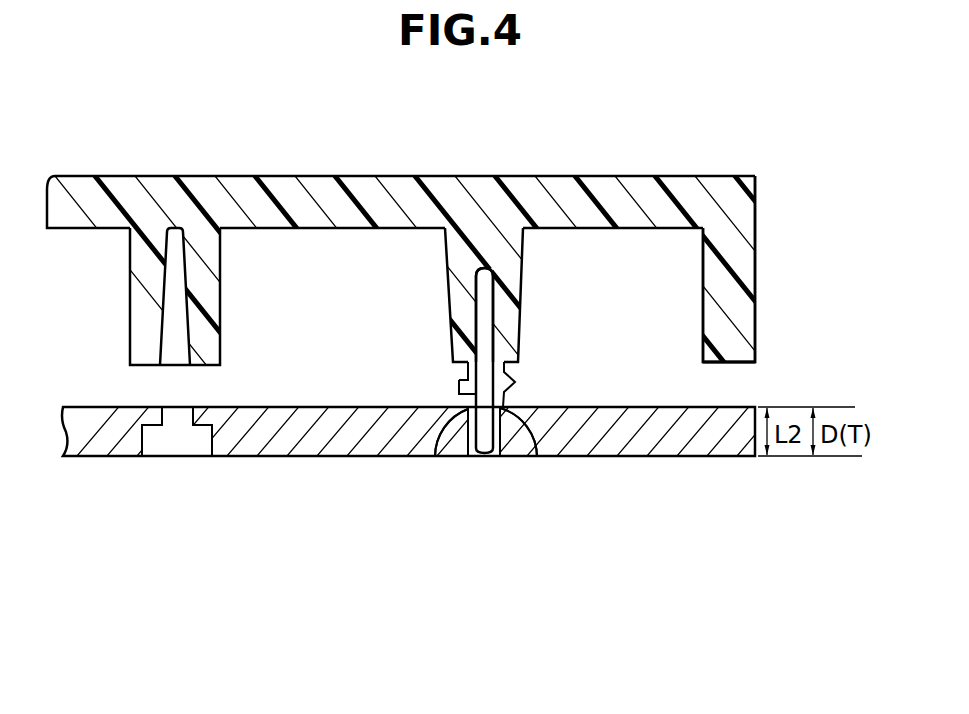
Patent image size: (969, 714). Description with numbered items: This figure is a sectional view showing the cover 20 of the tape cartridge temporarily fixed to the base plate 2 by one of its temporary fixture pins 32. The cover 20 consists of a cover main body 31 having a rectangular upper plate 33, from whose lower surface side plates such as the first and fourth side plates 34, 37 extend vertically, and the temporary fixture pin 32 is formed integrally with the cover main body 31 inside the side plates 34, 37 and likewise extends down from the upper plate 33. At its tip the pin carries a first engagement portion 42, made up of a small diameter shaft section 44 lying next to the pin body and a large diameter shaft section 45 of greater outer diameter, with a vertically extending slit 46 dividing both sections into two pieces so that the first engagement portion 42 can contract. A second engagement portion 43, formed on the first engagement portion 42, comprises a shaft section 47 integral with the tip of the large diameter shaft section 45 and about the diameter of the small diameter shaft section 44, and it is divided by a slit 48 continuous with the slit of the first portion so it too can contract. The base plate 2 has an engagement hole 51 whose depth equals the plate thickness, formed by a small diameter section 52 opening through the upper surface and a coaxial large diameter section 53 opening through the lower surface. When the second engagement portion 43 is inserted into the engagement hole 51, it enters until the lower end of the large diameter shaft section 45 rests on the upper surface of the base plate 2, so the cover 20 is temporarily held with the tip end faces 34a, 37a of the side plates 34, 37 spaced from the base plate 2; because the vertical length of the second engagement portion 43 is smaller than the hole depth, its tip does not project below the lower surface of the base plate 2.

The base plate 2 is at (431, 441).
The cover 20 is at (468, 229).
The cover main body 31 is at (508, 177).
The temporary fixture pin 32 is at (530, 276).
The upper plate 33 is at (374, 188).
The first side plate 34 is at (737, 240).
The fourth side plate 37 is at (775, 269).
The tip end face of first side plate 34a is at (735, 363).
The tip end face of fourth side plate 37a is at (781, 375).
The first engagement portion 42 is at (408, 345).
The second engagement portion 43 is at (485, 460).
The small diameter shaft section 44 is at (452, 366).
The large diameter shaft section 45 is at (454, 385).
The slit 46 is at (458, 393).
The shaft section 47 is at (470, 456).
The slit 48 is at (492, 456).
The engagement hole 51 is at (462, 456).
The small diameter section 52 is at (414, 446).
The large diameter section 53 is at (454, 446).